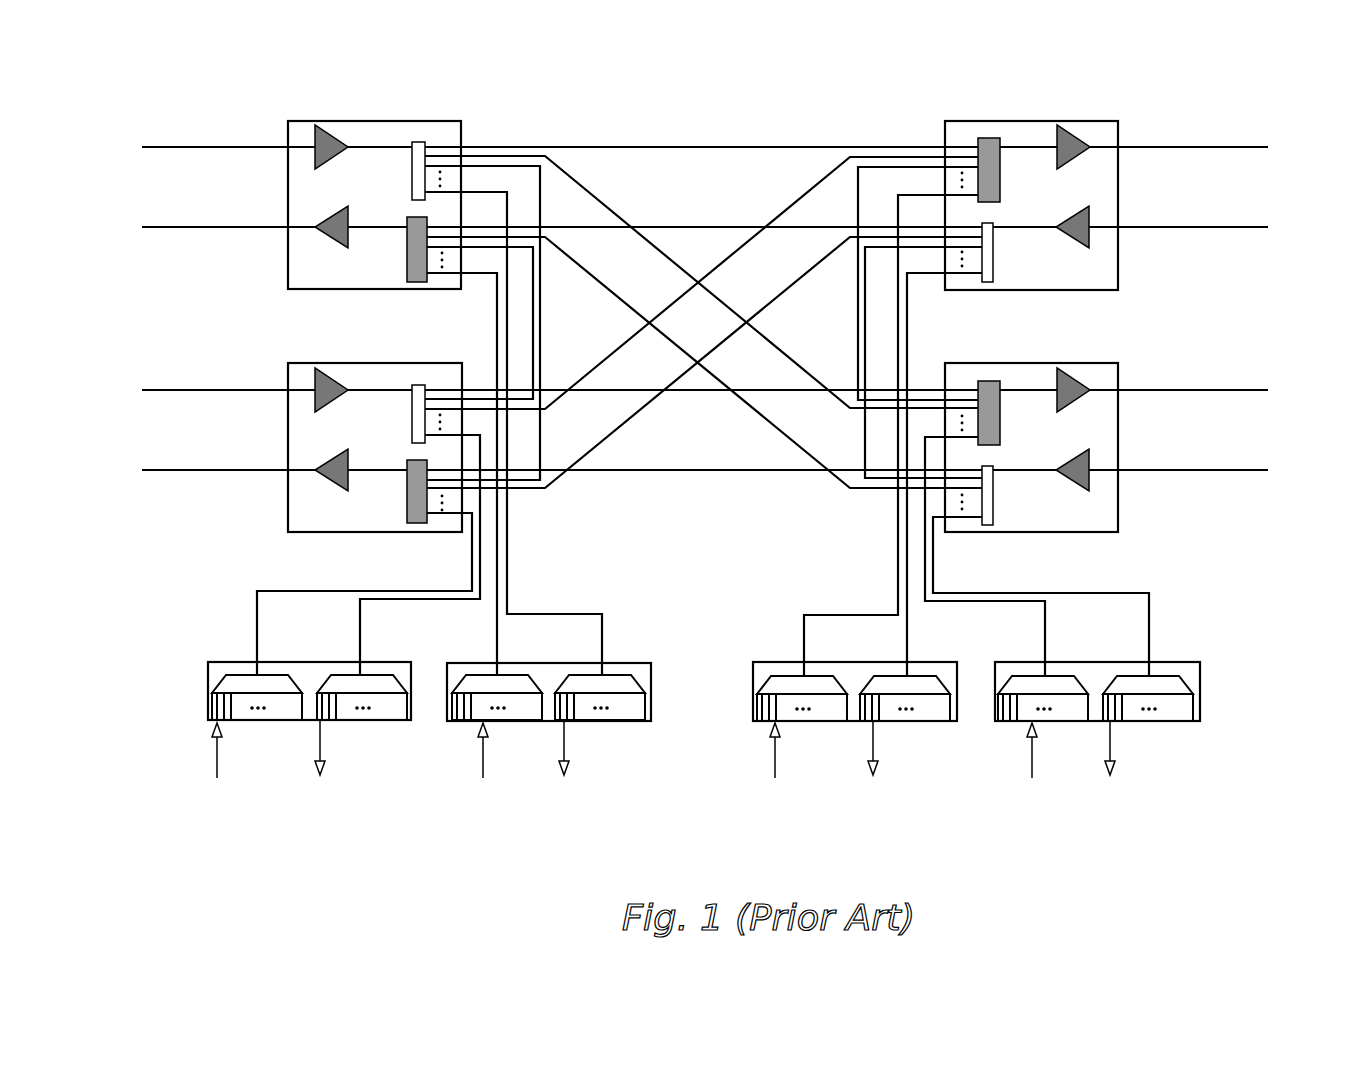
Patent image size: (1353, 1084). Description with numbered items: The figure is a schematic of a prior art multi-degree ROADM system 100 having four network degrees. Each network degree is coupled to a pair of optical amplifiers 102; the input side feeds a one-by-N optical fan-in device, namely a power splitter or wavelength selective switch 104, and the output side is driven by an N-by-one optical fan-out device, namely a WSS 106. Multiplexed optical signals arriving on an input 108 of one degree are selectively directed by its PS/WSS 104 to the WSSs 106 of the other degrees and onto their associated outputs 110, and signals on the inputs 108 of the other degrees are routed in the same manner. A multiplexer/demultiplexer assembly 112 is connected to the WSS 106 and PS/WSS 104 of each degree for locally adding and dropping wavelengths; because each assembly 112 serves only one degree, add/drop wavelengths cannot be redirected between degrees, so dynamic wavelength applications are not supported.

The multi-degree ROADM system 100 is at (704, 426).
The optical amplifier 102 is at (317, 124).
The power splitter or wavelength selective switch 104 is at (420, 142).
The wavelength selective switch 106 is at (412, 265).
The input 108 is at (165, 148).
The output 110 is at (187, 228).
The multiplexer/demultiplexer assembly 112 is at (411, 720).